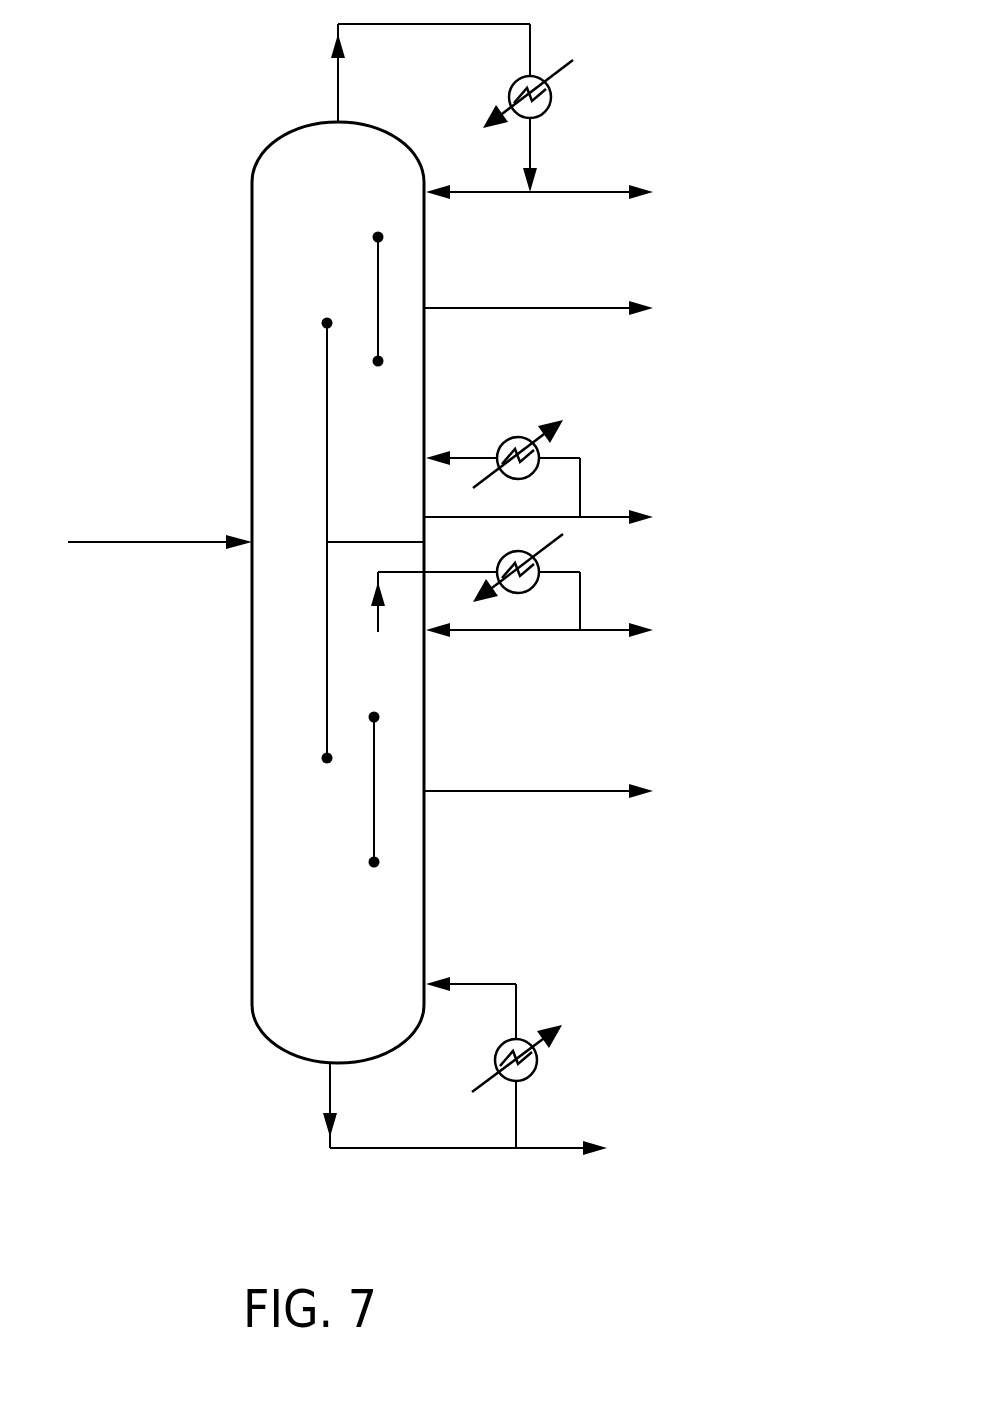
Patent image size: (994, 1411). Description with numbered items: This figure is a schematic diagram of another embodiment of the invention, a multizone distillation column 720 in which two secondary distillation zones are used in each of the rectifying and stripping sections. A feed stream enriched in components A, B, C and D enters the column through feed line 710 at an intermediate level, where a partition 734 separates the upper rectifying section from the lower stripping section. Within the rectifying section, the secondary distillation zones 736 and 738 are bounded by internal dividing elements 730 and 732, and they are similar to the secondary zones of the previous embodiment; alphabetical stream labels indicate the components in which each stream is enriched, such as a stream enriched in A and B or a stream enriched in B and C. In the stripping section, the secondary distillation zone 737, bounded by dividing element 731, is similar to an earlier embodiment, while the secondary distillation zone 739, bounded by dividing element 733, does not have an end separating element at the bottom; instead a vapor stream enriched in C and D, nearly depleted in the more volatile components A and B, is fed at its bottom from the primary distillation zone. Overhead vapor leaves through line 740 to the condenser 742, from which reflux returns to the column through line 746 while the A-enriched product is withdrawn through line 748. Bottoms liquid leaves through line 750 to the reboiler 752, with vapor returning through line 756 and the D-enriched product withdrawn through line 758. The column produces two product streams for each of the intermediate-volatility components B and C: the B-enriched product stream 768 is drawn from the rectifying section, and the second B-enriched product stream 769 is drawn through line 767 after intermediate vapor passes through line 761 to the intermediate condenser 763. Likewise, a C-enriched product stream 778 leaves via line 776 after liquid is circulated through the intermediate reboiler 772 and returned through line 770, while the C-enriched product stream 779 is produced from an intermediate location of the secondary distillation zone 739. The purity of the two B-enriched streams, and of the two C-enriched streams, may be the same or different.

The feed stream ABCD 710 is at (170, 547).
The multizone distillation column 720 is at (252, 333).
The upper column section AB-BC 730 is at (378, 268).
The lower column section ABC-BCD 731 is at (327, 692).
The column section ABC-BCD 732 is at (327, 477).
The column section BC-CD 733 is at (374, 837).
The dividing partition 734 is at (377, 542).
The secondary distillation zone 736 is at (384, 303).
The secondary distillation zone 737 is at (357, 668).
The secondary distillation zone 738 is at (366, 448).
The secondary distillation zone 739 is at (382, 788).
The overhead vapor line 740 is at (338, 86).
The condenser 742 is at (541, 78).
The reflux line 746 is at (490, 193).
The product A line 748 is at (575, 192).
The bottoms line 750 is at (330, 1092).
The reboiler 752 is at (535, 1078).
The reboiler return line 756 is at (485, 984).
The product D line 758 is at (540, 1148).
The intermediate vapor line 761 is at (443, 572).
The intermediate condenser 763 is at (539, 567).
The intermediate reflux line 767 is at (520, 630).
The B-enriched product stream 768 is at (528, 308).
The B-enriched product stream 769 is at (603, 630).
The intermediate return line 770 is at (470, 458).
The intermediate reboiler 772 is at (528, 433).
The intermediate liquid line 776 is at (500, 517).
The product C line 778 is at (603, 517).
The C-enriched product stream 779 is at (485, 791).